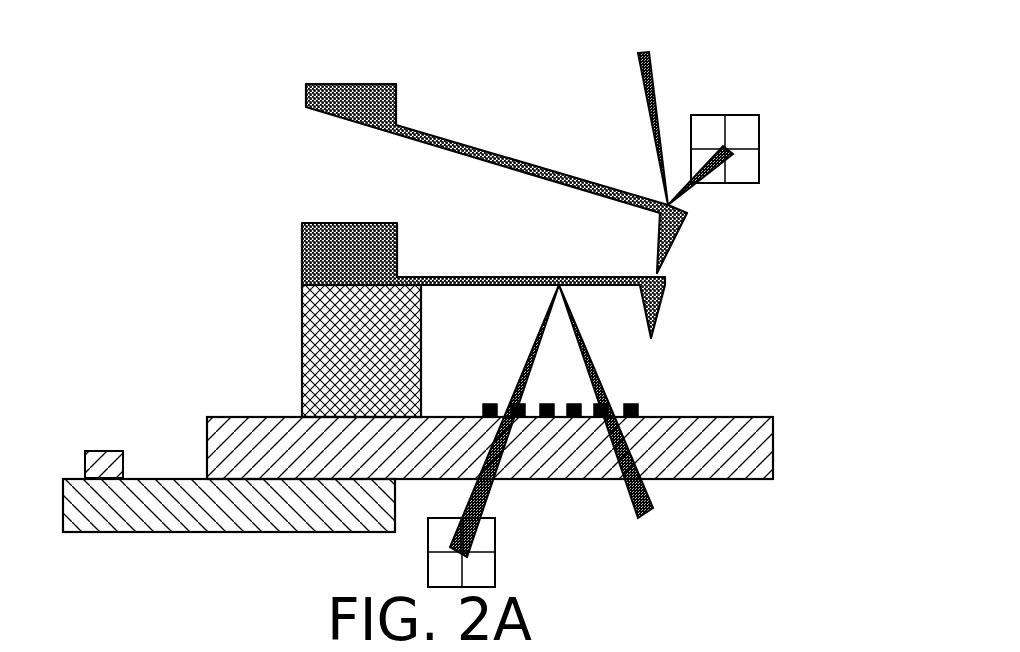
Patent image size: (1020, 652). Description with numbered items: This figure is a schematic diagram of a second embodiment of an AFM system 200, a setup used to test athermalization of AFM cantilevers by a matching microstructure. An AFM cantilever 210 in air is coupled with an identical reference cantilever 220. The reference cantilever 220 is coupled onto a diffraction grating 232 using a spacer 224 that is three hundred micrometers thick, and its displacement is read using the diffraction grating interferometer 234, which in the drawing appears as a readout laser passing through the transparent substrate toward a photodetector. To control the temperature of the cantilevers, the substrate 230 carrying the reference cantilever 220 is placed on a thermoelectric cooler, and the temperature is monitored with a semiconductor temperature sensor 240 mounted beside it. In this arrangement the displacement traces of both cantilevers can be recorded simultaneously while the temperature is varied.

The AFM system 200 is at (196, 88).
The AFM cantilever 210 is at (468, 146).
The reference cantilever 220 is at (447, 277).
The spacer 224 is at (302, 342).
The substrate 230 is at (262, 417).
The diffraction grating 232 is at (636, 404).
The diffraction grating interferometer 234 is at (696, 505).
The semiconductor temperature sensor 240 is at (85, 456).